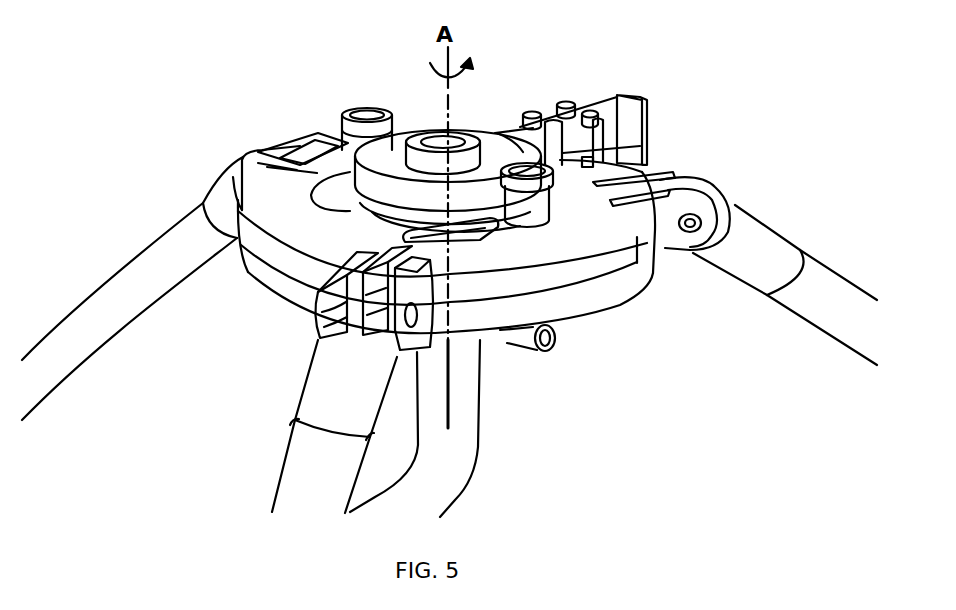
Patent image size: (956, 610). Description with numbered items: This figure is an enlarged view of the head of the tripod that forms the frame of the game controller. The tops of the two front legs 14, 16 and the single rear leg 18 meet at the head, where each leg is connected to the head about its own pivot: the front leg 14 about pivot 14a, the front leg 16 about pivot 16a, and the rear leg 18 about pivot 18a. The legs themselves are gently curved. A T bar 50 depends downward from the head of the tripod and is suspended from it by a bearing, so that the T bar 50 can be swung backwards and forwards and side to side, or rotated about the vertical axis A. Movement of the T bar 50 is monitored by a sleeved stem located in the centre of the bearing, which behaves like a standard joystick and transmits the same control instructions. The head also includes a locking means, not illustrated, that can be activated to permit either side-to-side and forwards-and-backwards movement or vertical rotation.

The front leg 14 is at (310, 477).
The pivot 14a is at (347, 303).
The front leg 16 is at (812, 310).
The pivot 16a is at (704, 210).
The rear leg 18 is at (143, 293).
The pivot 18a is at (283, 156).
The T bar 50 is at (475, 437).